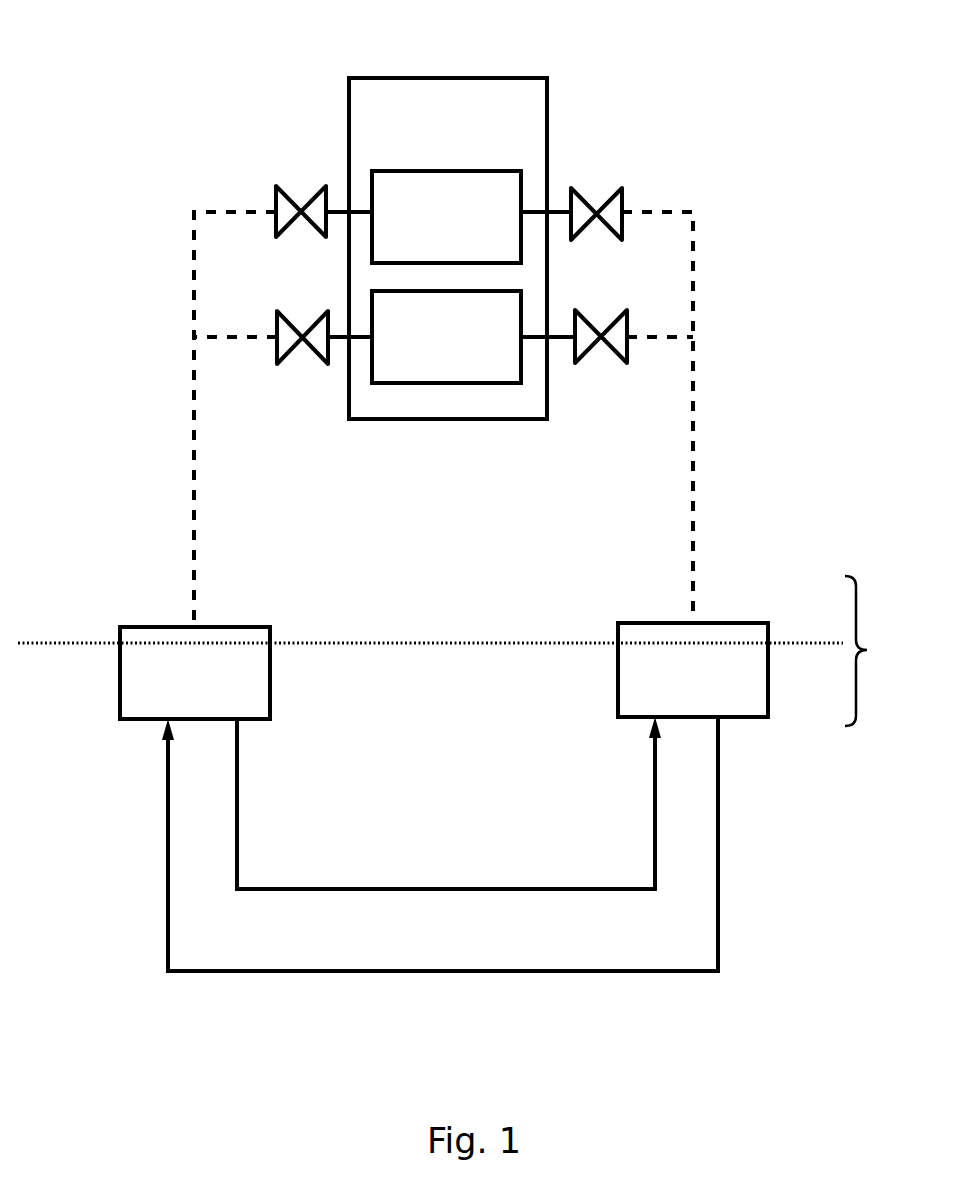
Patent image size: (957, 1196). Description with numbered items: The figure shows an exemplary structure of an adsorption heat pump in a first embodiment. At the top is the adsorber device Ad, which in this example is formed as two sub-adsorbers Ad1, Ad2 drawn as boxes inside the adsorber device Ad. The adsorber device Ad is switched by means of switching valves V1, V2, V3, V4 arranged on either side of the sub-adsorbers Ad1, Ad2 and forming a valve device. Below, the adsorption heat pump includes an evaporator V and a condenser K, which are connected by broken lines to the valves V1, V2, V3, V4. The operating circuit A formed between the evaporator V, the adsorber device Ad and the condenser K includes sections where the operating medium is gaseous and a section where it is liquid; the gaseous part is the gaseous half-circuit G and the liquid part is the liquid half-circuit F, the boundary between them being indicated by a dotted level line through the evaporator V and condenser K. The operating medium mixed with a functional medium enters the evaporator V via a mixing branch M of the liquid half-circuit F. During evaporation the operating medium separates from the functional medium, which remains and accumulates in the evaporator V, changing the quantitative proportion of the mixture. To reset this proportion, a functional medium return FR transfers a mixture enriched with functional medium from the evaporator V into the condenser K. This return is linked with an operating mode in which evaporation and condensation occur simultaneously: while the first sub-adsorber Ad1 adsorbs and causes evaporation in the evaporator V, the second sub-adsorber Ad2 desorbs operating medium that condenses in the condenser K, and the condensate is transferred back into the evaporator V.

The adsorber device Ad is at (448, 248).
The first sub-adsorber Ad1 is at (446, 217).
The second sub-adsorber Ad2 is at (446, 337).
The switching valve V1 is at (298, 203).
The switching valve V2 is at (303, 345).
The switching valve V3 is at (585, 207).
The switching valve V4 is at (602, 342).
The evaporator V is at (195, 673).
The condenser K is at (693, 670).
The functional medium return FR is at (388, 889).
The mixing branch M is at (273, 972).
The gaseous half-circuit G is at (814, 606).
The liquid half-circuit F is at (812, 689).
The operating circuit A is at (874, 651).